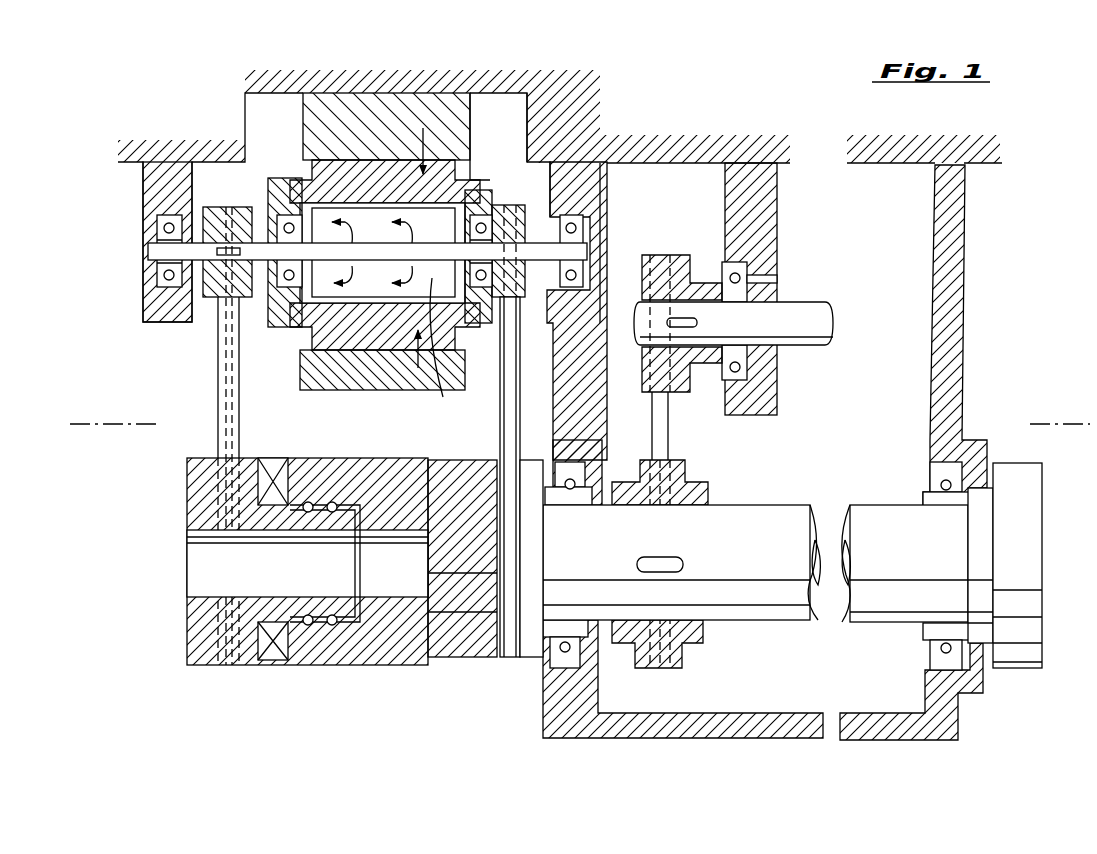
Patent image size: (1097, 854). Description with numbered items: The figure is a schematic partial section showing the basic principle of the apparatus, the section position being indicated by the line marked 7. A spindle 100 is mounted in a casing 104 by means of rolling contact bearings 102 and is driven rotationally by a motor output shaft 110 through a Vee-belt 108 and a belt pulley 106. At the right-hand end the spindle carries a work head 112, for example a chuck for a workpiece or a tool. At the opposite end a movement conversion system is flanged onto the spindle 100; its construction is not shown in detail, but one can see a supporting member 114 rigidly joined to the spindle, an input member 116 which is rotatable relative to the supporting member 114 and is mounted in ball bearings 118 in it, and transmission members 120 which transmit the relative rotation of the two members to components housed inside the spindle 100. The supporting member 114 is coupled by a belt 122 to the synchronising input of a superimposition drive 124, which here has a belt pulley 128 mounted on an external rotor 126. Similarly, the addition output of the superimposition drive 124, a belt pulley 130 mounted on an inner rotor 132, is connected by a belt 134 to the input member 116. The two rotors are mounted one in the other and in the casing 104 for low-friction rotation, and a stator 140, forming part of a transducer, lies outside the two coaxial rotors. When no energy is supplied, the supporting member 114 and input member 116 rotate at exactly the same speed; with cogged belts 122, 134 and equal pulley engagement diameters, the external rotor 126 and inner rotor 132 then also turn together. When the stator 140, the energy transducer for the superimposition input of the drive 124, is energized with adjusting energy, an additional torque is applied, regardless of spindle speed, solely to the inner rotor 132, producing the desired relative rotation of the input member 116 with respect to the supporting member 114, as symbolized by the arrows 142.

The section line 7 is at (565, 429).
The spindle 100 is at (782, 551).
The rolling contact bearings 102 is at (565, 498).
The casing 104 is at (950, 365).
The belt pulley 106 is at (702, 496).
The Vee-belt 108 is at (664, 435).
The motor output shaft 110 is at (797, 345).
The work head 112 is at (1030, 545).
The supporting member 114 is at (450, 660).
The input member 116 is at (207, 655).
The ball bearings 118 is at (325, 652).
The transmission members 120 is at (276, 660).
The belt 122 is at (500, 440).
The superimposition drive 124 is at (508, 150).
The external rotor 126 is at (494, 194).
The belt pulley 128 is at (600, 190).
The belt pulley 130 is at (214, 288).
The inner rotor 132 is at (367, 320).
The belt 134 is at (225, 381).
The stator 140 is at (360, 102).
The arrows 142 is at (410, 248).